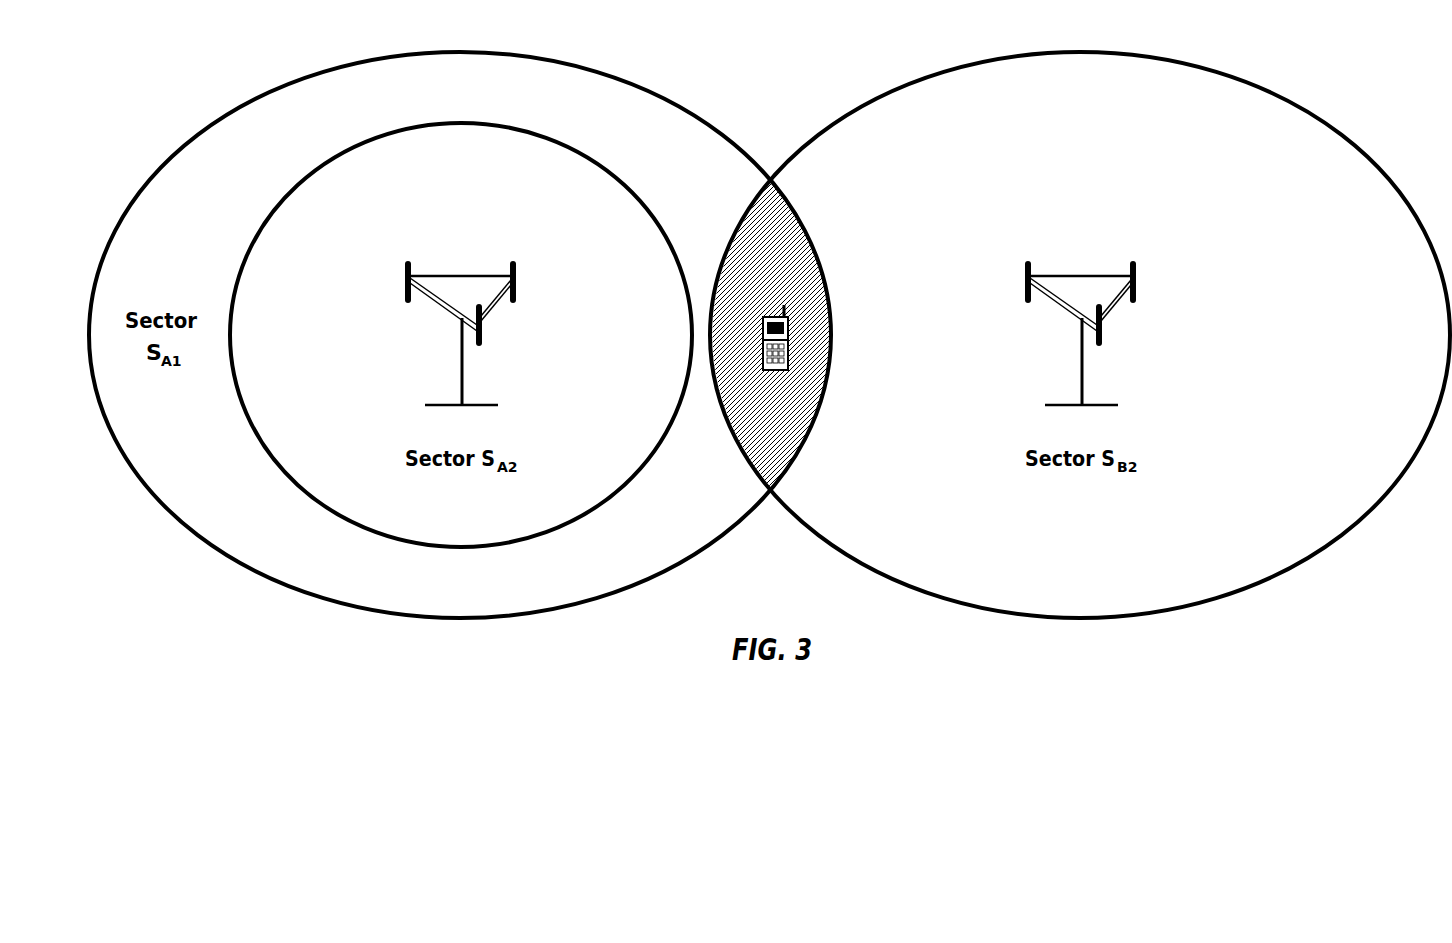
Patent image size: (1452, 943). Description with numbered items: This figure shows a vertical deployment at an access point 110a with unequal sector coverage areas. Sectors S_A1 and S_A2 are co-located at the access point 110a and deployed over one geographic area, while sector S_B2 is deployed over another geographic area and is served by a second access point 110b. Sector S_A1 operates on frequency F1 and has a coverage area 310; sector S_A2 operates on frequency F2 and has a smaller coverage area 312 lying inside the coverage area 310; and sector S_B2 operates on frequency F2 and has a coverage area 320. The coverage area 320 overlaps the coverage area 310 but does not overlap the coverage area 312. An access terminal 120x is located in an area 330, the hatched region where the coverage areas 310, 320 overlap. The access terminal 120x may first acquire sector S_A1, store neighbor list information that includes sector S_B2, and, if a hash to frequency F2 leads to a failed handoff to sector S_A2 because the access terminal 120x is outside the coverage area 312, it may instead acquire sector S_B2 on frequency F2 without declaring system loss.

The coverage area 310 is at (455, 50).
The coverage area 312 is at (455, 121).
The coverage area 320 is at (1075, 50).
The area 330 is at (788, 421).
The access point 110a is at (466, 263).
The base station B 110b is at (1086, 263).
The access terminal 120x is at (762, 321).